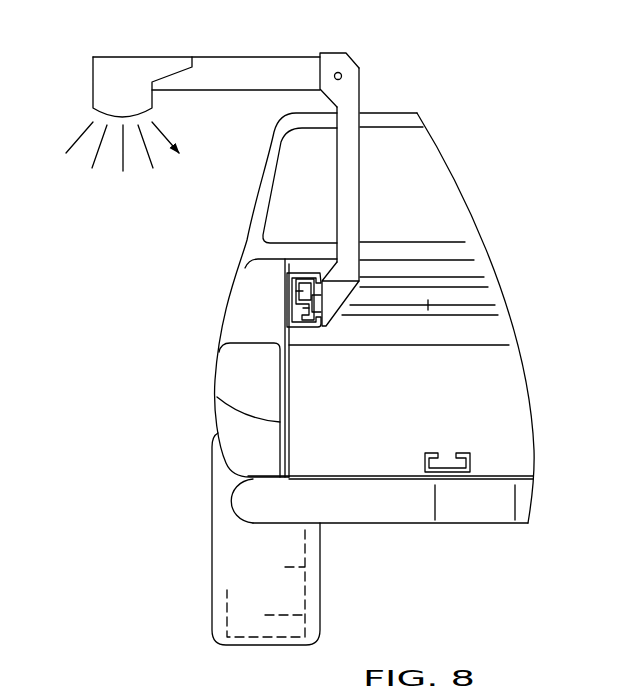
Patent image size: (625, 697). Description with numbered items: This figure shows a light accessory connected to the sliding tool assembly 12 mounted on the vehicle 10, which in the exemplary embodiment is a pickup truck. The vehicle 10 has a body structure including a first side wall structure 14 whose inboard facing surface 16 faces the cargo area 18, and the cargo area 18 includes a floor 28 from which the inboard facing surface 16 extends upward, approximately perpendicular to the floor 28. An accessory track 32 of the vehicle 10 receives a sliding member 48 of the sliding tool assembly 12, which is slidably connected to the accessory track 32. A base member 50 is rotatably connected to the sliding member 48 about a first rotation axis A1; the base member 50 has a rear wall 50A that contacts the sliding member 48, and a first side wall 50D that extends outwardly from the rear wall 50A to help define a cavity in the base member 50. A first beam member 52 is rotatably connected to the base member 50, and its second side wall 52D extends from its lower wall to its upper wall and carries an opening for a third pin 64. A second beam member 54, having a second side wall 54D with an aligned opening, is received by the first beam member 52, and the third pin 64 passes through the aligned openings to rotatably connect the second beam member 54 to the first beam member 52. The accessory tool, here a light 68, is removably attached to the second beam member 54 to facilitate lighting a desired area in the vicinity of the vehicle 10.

The vehicle 10 is at (388, 109).
The sliding tool assembly 12 is at (228, 145).
The first side wall structure 14 is at (263, 267).
The inboard facing surface 16 is at (293, 402).
The cargo area 18 is at (490, 392).
The floor 28 is at (497, 472).
The accessory track 32 is at (284, 291).
The sliding member 48 is at (310, 322).
The base member 50 is at (281, 332).
The rear wall 50A is at (310, 290).
The first side wall 50D is at (339, 292).
The first beam member 52 is at (355, 167).
The second side wall 52D is at (348, 201).
The second beam member 54 is at (212, 50).
The second side wall 54D is at (238, 68).
The third pin 64 is at (343, 73).
The light 68 is at (93, 105).
The first rotation axis A1 is at (428, 305).